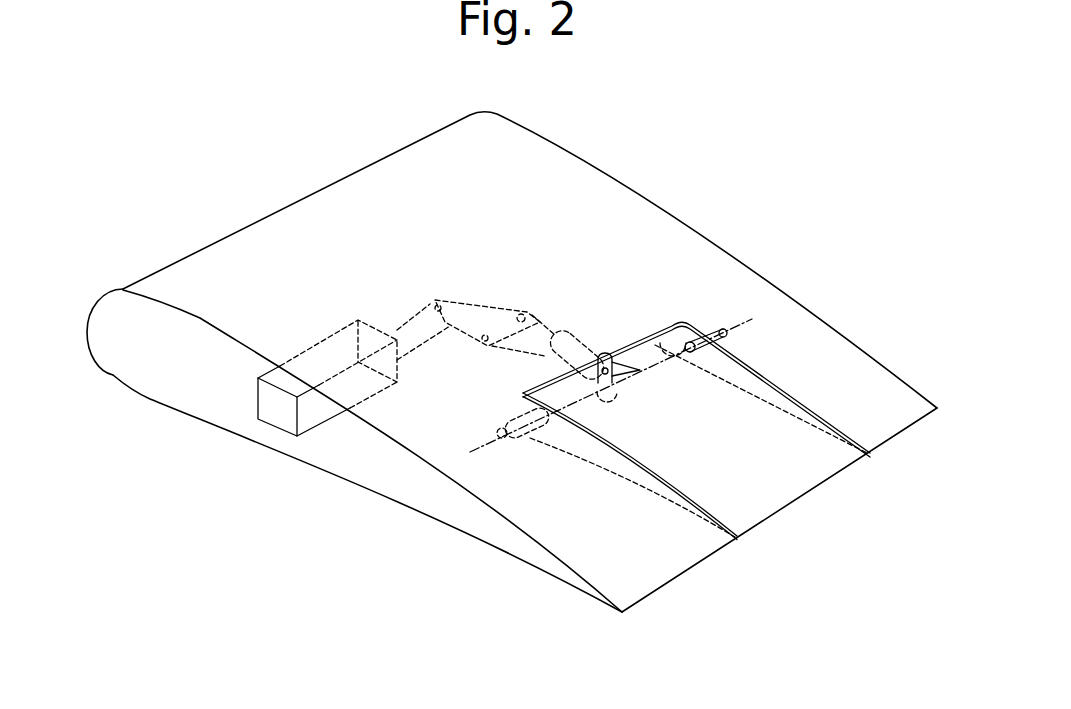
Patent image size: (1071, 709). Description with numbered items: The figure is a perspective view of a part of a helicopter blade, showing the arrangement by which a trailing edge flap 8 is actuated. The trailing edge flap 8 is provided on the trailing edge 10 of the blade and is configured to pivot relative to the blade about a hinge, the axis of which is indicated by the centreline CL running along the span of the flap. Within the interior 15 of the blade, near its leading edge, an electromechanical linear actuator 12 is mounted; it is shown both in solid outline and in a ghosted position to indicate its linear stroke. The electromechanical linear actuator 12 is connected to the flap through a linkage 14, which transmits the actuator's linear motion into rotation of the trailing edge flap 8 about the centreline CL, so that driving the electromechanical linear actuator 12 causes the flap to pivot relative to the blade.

The trailing edge flap 8 is at (787, 490).
The trailing edge 10 is at (694, 563).
The electromechanical linear actuator 12 is at (279, 421).
The linkage 14 is at (583, 337).
The interior 15 is at (178, 381).
The centreline CL is at (628, 375).